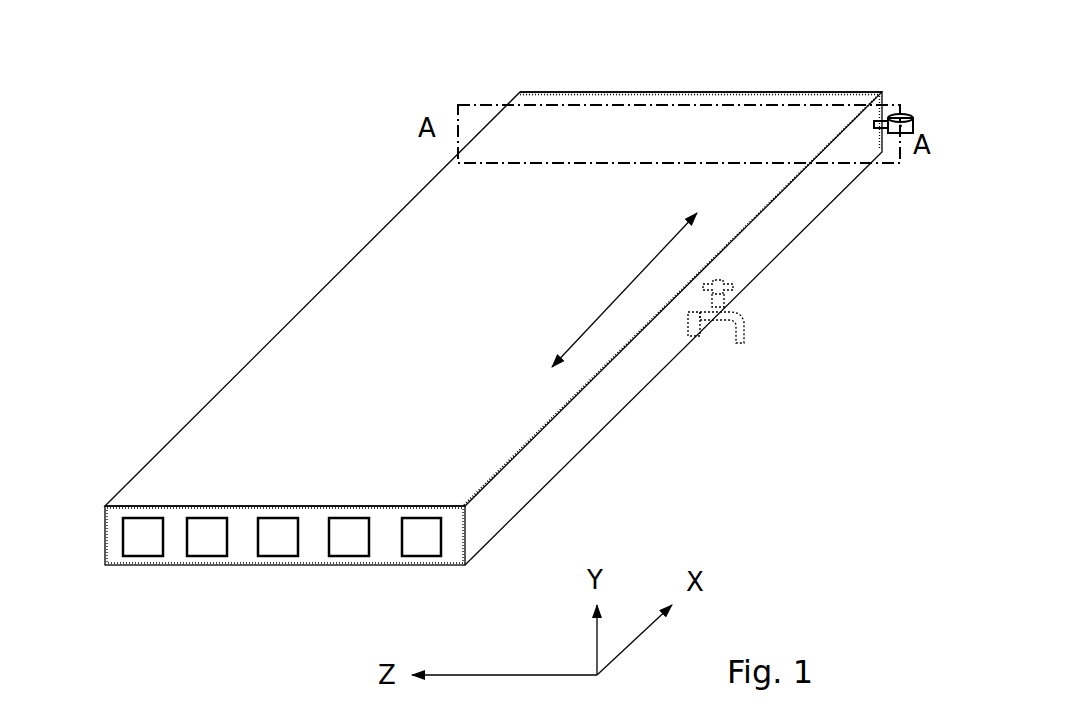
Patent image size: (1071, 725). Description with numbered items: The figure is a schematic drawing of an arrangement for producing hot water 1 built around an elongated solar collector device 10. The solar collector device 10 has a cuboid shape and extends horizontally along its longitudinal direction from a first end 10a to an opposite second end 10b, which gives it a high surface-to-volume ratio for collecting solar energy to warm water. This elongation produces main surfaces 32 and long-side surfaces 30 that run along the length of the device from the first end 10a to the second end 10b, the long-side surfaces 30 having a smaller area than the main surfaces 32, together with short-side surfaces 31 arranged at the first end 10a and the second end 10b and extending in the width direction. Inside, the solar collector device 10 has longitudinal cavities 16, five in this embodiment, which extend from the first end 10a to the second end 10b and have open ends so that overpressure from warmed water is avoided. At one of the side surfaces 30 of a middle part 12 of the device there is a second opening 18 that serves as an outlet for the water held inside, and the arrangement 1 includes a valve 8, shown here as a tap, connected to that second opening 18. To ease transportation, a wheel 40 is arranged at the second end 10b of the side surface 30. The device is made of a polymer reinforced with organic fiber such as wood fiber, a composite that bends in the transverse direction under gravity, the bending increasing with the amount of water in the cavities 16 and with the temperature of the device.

The arrangement for producing hot water 1 is at (484, 349).
The solar collector device 10 is at (461, 349).
The first end 10a is at (251, 579).
The second end 10b is at (520, 98).
The middle part 12 is at (624, 290).
The cavities 16 is at (140, 538).
The second opening 18 is at (695, 332).
The valve 8 is at (734, 364).
The long-side surfaces 30 is at (818, 190).
The short-side surfaces 31 is at (238, 552).
The main surfaces 32 is at (298, 378).
The wheel 40 is at (900, 112).